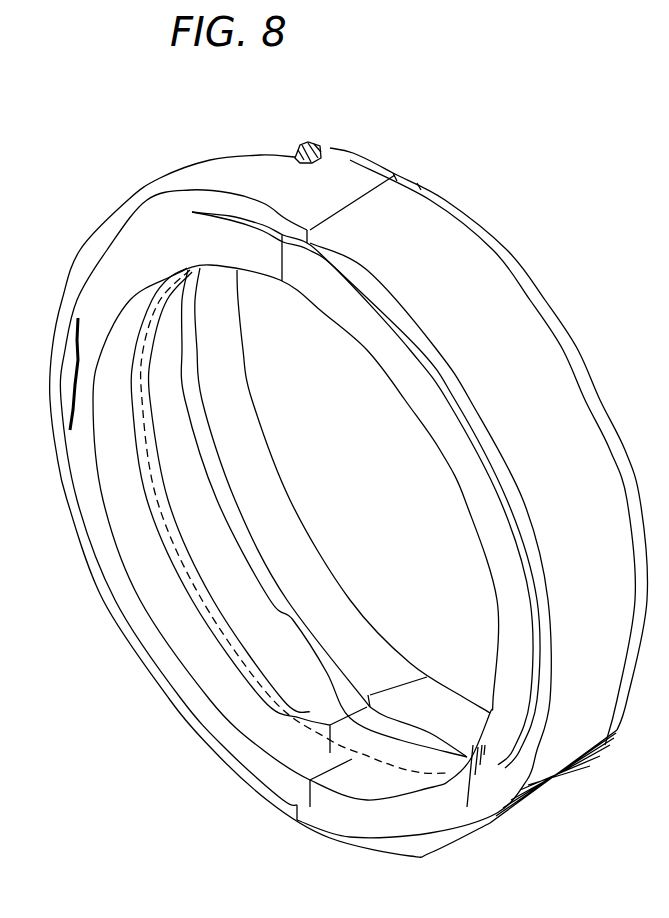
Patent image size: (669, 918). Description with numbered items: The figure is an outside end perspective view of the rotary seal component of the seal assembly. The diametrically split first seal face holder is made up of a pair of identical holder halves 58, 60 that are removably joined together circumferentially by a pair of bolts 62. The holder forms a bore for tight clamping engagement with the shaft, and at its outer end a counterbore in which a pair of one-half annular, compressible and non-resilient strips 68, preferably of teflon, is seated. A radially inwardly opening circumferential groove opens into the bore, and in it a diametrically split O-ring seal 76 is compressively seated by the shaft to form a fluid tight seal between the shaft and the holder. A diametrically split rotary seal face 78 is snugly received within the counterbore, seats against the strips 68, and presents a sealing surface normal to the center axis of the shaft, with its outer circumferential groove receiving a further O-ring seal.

The holder half 58 is at (565, 397).
The holder half 60 is at (127, 641).
The bolt 62 is at (320, 143).
The compressible and non-resilient strip 68 is at (263, 680).
The O-ring seal 76 is at (288, 600).
The rotary seal face 78 is at (97, 537).